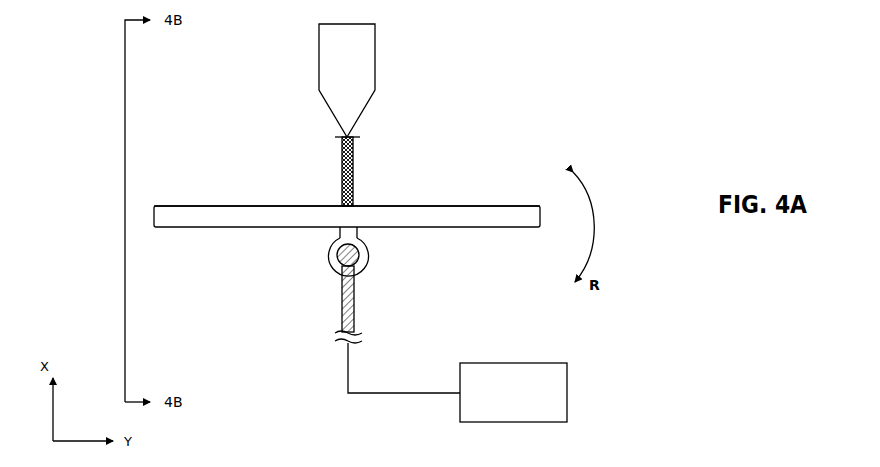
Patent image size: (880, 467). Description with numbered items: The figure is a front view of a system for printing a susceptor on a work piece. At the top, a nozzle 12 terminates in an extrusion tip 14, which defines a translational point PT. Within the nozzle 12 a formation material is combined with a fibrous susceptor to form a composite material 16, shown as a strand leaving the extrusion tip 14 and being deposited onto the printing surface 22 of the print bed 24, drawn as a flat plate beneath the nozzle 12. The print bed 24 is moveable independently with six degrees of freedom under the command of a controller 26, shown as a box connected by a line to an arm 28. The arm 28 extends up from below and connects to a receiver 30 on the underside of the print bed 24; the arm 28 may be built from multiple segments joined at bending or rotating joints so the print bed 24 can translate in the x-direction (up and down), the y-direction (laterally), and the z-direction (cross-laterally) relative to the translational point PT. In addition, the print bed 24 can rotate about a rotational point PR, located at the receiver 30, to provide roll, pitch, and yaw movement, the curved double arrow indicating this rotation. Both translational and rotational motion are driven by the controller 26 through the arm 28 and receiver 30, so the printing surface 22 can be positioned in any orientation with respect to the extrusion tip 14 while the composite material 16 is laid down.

The nozzle 12 is at (376, 38).
The extrusion tip 14 is at (349, 136).
The composite material 16 is at (352, 148).
The printing surface 22 is at (434, 202).
The print bed 24 is at (503, 215).
The controller 26 is at (513, 392).
The arm 28 is at (355, 289).
The receiver 30 is at (365, 250).
The translational point PT is at (343, 139).
The rotational point PR is at (340, 252).